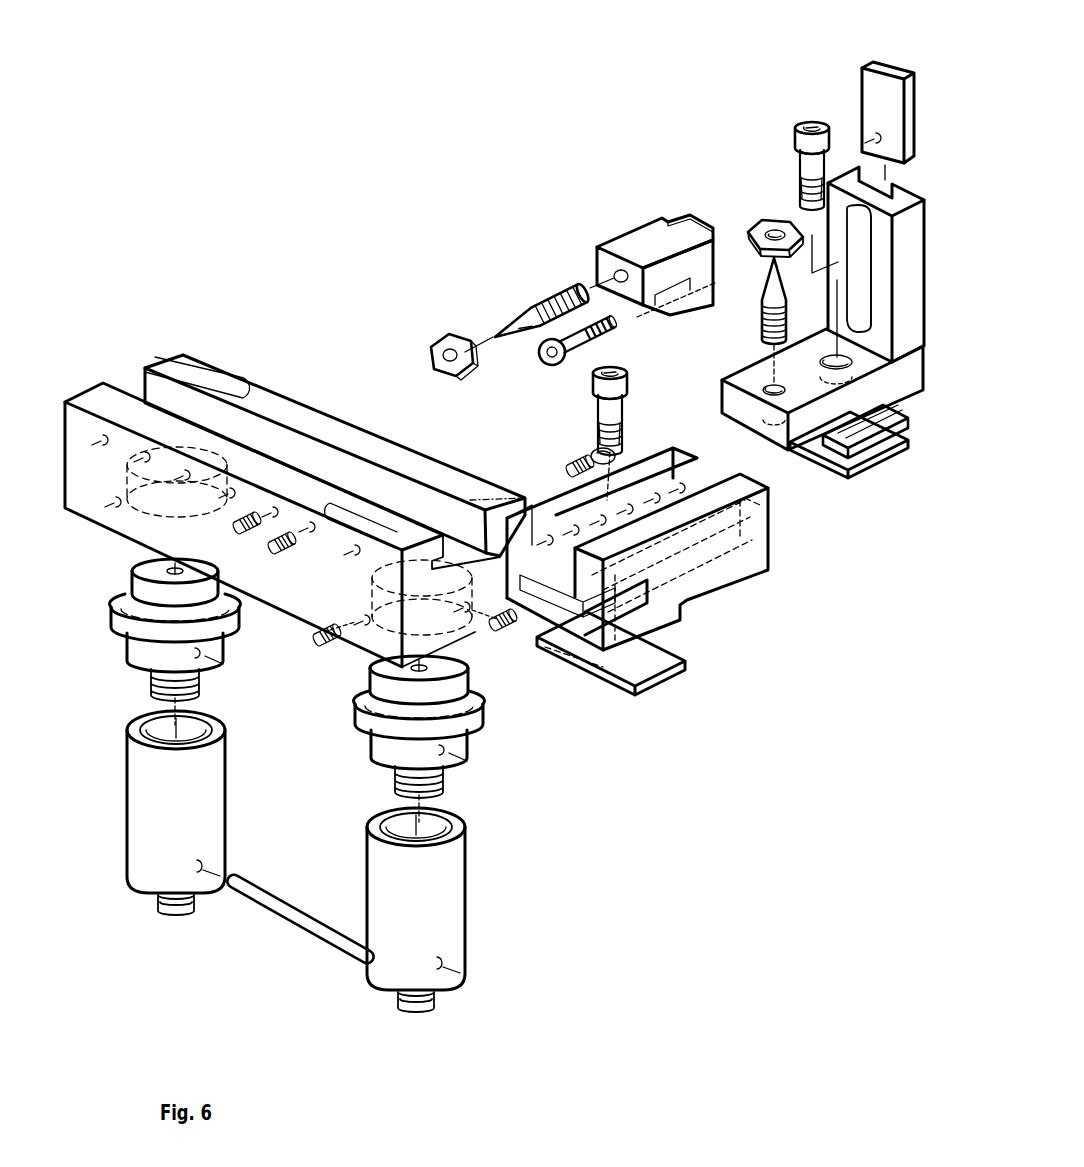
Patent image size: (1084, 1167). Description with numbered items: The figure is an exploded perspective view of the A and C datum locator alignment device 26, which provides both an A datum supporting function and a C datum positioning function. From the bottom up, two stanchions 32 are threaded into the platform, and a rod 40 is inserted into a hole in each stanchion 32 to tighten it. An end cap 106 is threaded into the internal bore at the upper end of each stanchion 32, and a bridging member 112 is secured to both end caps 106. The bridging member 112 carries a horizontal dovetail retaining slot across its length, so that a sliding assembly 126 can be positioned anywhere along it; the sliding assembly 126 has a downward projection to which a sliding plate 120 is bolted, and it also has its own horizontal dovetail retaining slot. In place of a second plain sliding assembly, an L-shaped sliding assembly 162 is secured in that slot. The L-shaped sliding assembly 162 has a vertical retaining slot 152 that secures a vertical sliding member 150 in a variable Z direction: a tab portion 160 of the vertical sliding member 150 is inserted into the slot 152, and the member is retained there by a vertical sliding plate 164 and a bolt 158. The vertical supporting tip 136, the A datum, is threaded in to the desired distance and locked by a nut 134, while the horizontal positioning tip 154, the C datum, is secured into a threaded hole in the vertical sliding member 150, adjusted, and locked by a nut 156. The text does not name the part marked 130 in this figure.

The A and C datum locator alignment device 26 is at (355, 150).
The stanchion 32 is at (467, 910).
The rod 40 is at (303, 923).
The end cap 106 is at (473, 733).
The bridging member 112 is at (247, 375).
The sliding plate 120 is at (877, 458).
The sliding assembly 126 is at (717, 593).
The socket head screw 130 is at (810, 122).
The nut 134 is at (773, 217).
The vertical supporting tip 136 is at (760, 318).
The vertical sliding member 150 is at (638, 227).
The vertical retaining slot 152 is at (885, 185).
The horizontal positioning tip 154 is at (540, 303).
The nut 156 is at (442, 328).
The bolt 158 is at (547, 367).
The tab portion 160 is at (697, 213).
The L-shaped sliding assembly 162 is at (733, 378).
The vertical sliding plate 164 is at (870, 62).